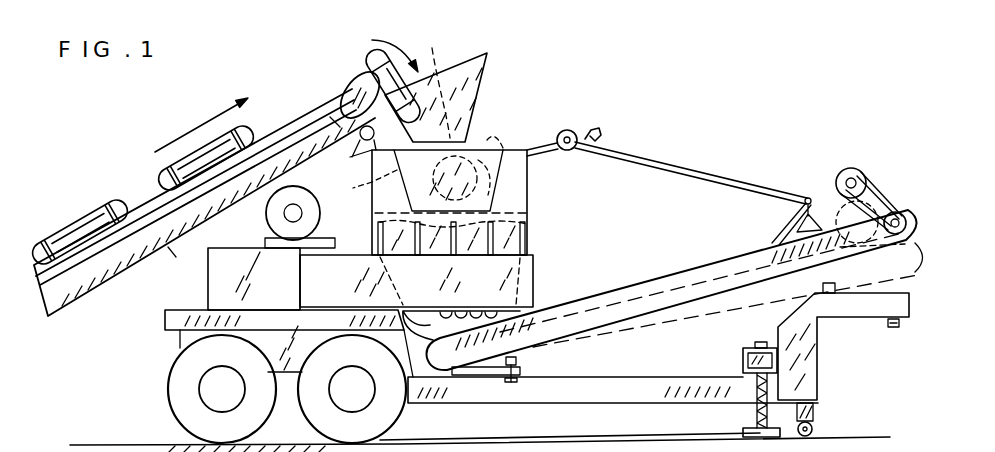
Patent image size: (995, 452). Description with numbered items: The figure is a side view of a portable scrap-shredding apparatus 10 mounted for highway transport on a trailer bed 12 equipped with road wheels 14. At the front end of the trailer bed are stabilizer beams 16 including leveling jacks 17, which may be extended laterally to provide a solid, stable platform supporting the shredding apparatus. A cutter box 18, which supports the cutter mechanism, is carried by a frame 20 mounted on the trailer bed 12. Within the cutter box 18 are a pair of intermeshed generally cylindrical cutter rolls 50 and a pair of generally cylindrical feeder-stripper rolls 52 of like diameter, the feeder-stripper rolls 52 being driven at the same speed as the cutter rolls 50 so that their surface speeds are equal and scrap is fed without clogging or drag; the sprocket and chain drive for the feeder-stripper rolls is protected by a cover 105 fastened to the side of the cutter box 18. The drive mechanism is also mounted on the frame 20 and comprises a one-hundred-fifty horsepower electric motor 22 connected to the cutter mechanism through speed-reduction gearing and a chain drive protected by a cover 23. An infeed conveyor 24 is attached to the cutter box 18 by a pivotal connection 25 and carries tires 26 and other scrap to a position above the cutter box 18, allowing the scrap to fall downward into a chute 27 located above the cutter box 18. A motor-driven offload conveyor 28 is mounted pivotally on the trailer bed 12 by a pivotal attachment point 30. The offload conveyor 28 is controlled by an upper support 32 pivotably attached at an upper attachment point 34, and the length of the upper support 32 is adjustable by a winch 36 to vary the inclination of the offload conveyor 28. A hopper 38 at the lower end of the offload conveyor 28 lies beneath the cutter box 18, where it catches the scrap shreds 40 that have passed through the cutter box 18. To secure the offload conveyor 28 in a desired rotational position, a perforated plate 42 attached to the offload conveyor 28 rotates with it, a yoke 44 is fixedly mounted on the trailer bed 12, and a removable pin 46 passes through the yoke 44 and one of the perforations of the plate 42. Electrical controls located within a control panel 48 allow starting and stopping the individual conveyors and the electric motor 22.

The portable scrap-shredding apparatus 10 is at (606, 92).
The trailer bed 12 is at (806, 343).
The road wheels 14 is at (316, 419).
The stabilizer beams 16 is at (742, 360).
The leveling jacks 17 is at (814, 417).
The cutter box 18 is at (528, 137).
The frame 20 is at (538, 270).
The electric motor 22 is at (266, 215).
The cover 23 is at (337, 259).
The infeed conveyor 24 is at (303, 117).
The pivotal connection 25 is at (362, 148).
The tires 26 is at (84, 222).
The chute 27 is at (483, 80).
The offload conveyor 28 is at (745, 262).
The pivotal attachment point 30 is at (466, 380).
The upper support 32 is at (731, 180).
The upper attachment point 34 is at (563, 133).
The winch 36 is at (590, 127).
The hopper 38 is at (428, 325).
The scrap shreds 40 is at (488, 312).
The perforated plate 42 is at (490, 380).
The yoke 44 is at (538, 375).
The removable pin 46 is at (517, 364).
The control panel 48 is at (222, 280).
The cutter rolls 50 is at (528, 212).
The feeder-stripper rolls 52 is at (488, 140).
The cover 105 is at (487, 167).